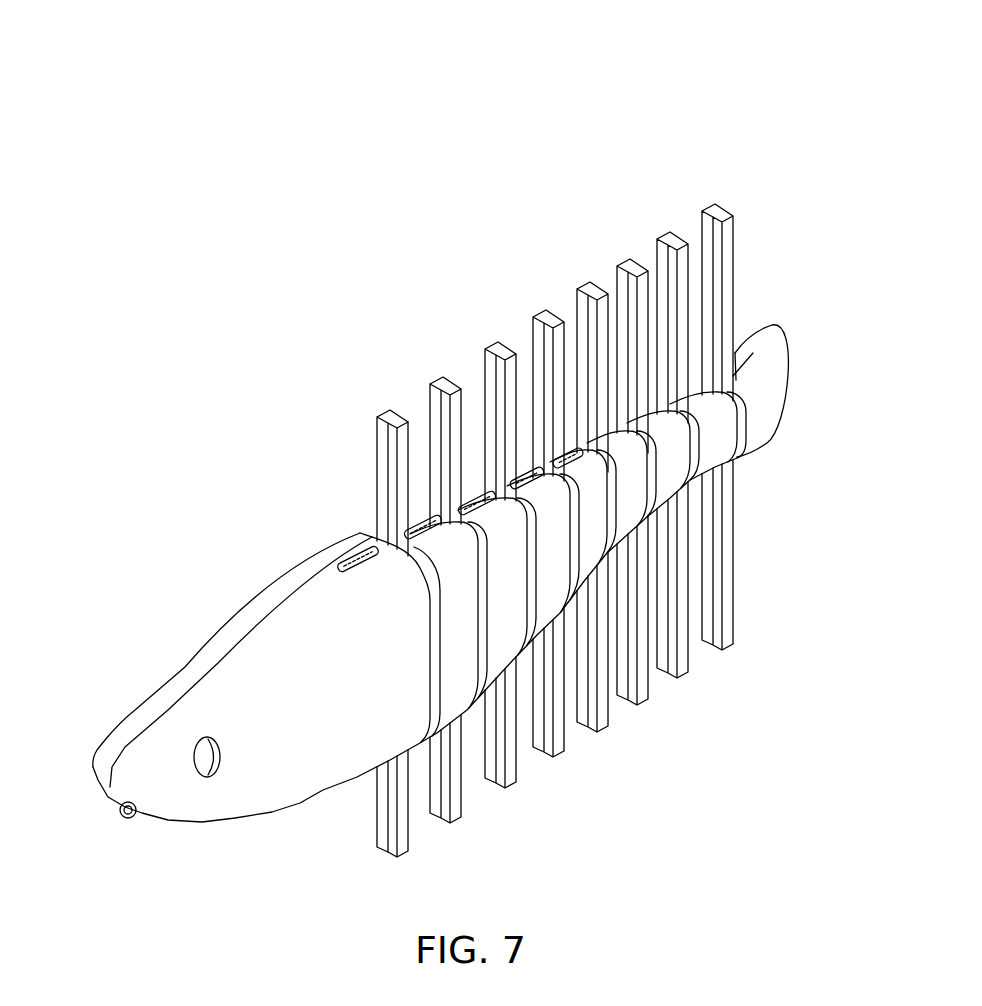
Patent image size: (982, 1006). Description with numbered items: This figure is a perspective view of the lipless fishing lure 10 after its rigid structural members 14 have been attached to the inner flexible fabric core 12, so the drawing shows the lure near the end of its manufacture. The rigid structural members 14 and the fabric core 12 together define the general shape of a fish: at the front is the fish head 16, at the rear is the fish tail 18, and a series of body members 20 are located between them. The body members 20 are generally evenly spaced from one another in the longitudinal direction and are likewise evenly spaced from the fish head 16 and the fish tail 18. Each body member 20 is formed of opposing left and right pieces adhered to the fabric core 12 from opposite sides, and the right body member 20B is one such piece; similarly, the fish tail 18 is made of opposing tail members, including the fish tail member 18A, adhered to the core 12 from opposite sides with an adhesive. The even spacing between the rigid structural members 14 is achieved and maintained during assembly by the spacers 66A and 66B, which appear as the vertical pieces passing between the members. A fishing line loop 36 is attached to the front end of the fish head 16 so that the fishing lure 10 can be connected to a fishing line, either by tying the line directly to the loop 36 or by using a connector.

The fishing lure 10 is at (503, 110).
The flexible fabric core 12 is at (777, 300).
The rigid structural members 14 is at (440, 552).
The fish head 16 is at (335, 762).
The fish tail 18 is at (767, 380).
The fish tail member 18A is at (767, 402).
The body members 20 is at (455, 637).
The right body member 20B is at (463, 677).
The fishing line loop 36 is at (120, 812).
The spacer 66A is at (377, 437).
The spacer 66B is at (400, 478).